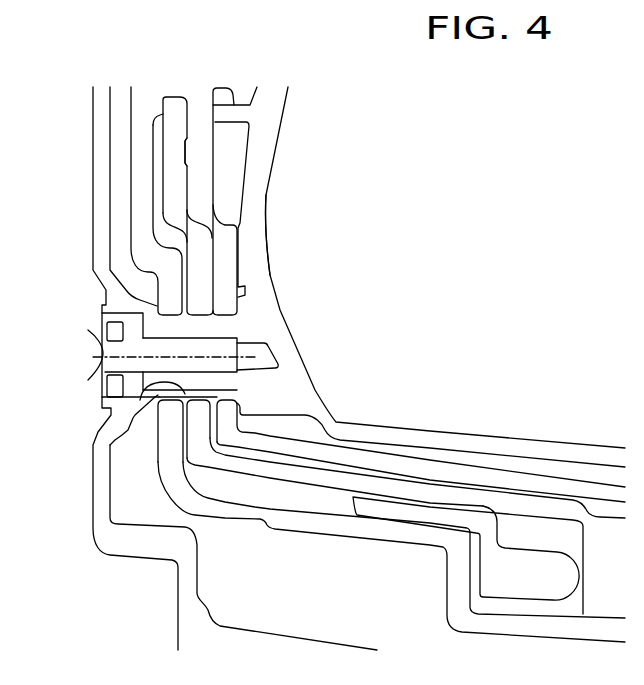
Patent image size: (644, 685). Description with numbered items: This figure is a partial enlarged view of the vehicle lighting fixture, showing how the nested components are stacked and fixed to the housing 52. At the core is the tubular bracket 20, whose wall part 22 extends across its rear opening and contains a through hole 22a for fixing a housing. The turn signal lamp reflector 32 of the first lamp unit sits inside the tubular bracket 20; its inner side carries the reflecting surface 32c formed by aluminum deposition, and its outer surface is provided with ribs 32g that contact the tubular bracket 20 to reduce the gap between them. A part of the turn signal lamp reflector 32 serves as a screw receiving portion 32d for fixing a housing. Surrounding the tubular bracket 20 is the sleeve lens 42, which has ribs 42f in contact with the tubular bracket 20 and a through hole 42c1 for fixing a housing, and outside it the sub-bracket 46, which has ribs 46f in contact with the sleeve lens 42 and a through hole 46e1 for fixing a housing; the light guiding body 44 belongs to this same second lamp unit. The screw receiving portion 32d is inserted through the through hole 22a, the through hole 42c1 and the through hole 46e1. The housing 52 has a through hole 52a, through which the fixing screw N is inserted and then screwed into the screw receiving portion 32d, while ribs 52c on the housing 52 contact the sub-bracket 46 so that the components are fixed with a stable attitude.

The housing 52 is at (93, 243).
The ribs 52c is at (104, 312).
The through hole 52a is at (105, 378).
The fixing screw N is at (108, 350).
The sub-bracket 46 is at (143, 97).
The ribs 46f is at (160, 110).
The through hole for fixing a housing 46e1 is at (155, 393).
The sleeve lens 42 is at (170, 98).
The ribs 42f is at (185, 152).
The through hole for fixing a housing 42c1 is at (168, 390).
The through hole for fixing a housing 22a is at (196, 400).
The tubular bracket 20 is at (384, 275).
The wall part 22 is at (205, 97).
The turn signal lamp reflector 32 is at (272, 100).
The reflecting surface 32c is at (267, 198).
The ribs 32g is at (233, 101).
The screw receiving portion for fixing a housing 32d is at (145, 325).
The light guiding body 44 is at (532, 586).